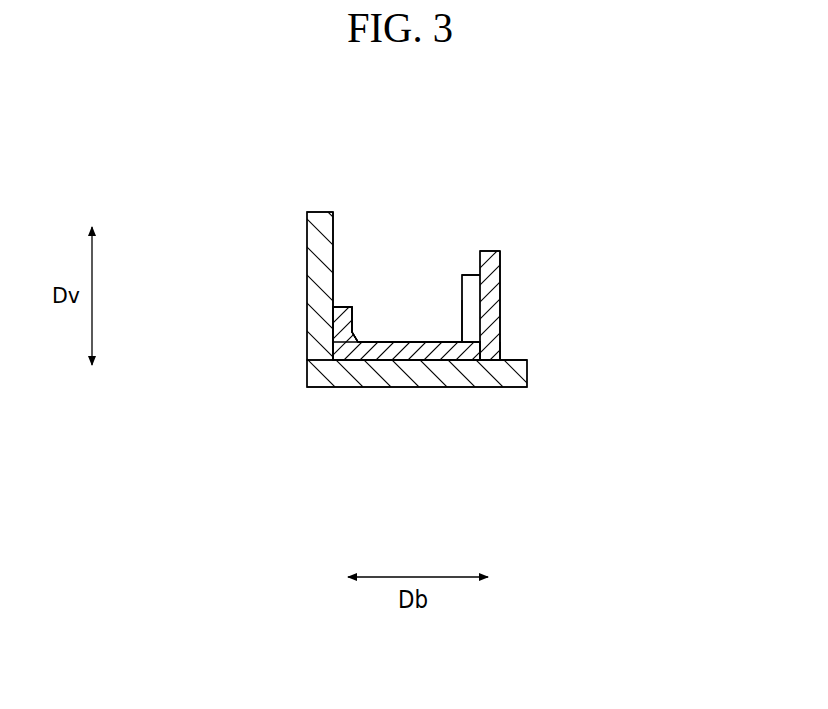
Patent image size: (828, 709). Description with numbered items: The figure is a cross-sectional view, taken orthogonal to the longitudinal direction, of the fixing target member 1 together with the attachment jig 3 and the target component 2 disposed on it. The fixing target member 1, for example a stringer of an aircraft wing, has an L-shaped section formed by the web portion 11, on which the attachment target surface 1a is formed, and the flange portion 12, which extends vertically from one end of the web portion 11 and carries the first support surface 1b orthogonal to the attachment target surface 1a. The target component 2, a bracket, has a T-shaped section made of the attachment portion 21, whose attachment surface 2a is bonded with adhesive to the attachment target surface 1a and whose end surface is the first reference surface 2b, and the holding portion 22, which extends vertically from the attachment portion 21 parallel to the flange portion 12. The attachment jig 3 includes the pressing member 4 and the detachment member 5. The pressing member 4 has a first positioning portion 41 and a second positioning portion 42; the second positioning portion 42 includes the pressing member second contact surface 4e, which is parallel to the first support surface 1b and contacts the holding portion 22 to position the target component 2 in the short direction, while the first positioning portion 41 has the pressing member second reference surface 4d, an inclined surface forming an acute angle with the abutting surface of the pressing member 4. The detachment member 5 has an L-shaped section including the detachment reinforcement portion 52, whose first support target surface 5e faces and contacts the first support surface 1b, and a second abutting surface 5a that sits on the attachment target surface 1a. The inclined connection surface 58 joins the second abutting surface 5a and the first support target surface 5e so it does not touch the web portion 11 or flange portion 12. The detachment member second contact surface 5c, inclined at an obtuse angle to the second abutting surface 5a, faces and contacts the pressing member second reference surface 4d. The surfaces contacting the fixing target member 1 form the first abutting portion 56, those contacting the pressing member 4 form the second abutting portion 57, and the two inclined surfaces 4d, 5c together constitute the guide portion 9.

The fixing target member 1 is at (320, 389).
The web portion 11 is at (513, 373).
The flange portion 12 is at (307, 236).
The attachment target surface 1a is at (510, 360).
The first support surface 1b is at (339, 213).
The target component 2 is at (471, 308).
The attachment portion 21 is at (460, 345).
The holding portion 22 is at (470, 274).
The attachment surface 2a is at (458, 345).
The first reference surface 2b is at (486, 273).
The attachment jig 3 is at (416, 305).
The pressing member 4 is at (501, 272).
The first positioning portion 41 is at (482, 345).
The second positioning portion 42 is at (494, 251).
The pressing member second reference surface 4d is at (374, 342).
The pressing member second contact surface 4e is at (498, 312).
The detachment member 5 is at (342, 304).
The detachment reinforcement portion 52 is at (335, 308).
The first abutting portion 56 is at (406, 333).
The second abutting portion 57 is at (406, 351).
The connection surface 58 is at (356, 339).
The second abutting surface 5a is at (365, 362).
The detachment member second contact surface 5c is at (380, 348).
The first support target surface 5e is at (350, 322).
The guide portion 9 is at (406, 351).